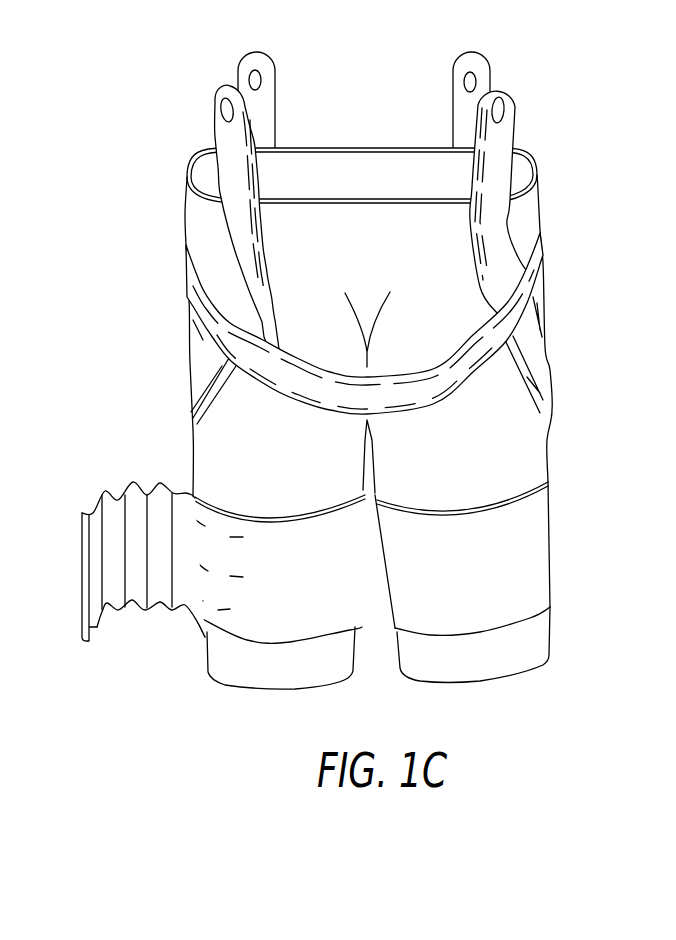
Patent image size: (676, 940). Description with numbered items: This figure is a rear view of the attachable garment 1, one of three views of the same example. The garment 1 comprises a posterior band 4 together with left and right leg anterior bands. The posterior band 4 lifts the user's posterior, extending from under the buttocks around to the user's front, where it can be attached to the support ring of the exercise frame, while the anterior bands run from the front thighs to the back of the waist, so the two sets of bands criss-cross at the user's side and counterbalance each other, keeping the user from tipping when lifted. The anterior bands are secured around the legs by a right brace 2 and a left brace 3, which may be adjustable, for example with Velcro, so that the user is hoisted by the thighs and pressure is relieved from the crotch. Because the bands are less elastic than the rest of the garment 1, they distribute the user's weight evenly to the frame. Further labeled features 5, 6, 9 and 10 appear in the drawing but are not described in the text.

The attachable garment 1 is at (533, 207).
The right brace 2 is at (507, 553).
The left brace 3 is at (82, 505).
The posterior band 4 is at (443, 380).
The attachment tab 5 is at (257, 100).
The attachment tab 6 is at (480, 70).
The shoulder strap loop 9 is at (497, 137).
The shoulder strap loop 10 is at (240, 140).